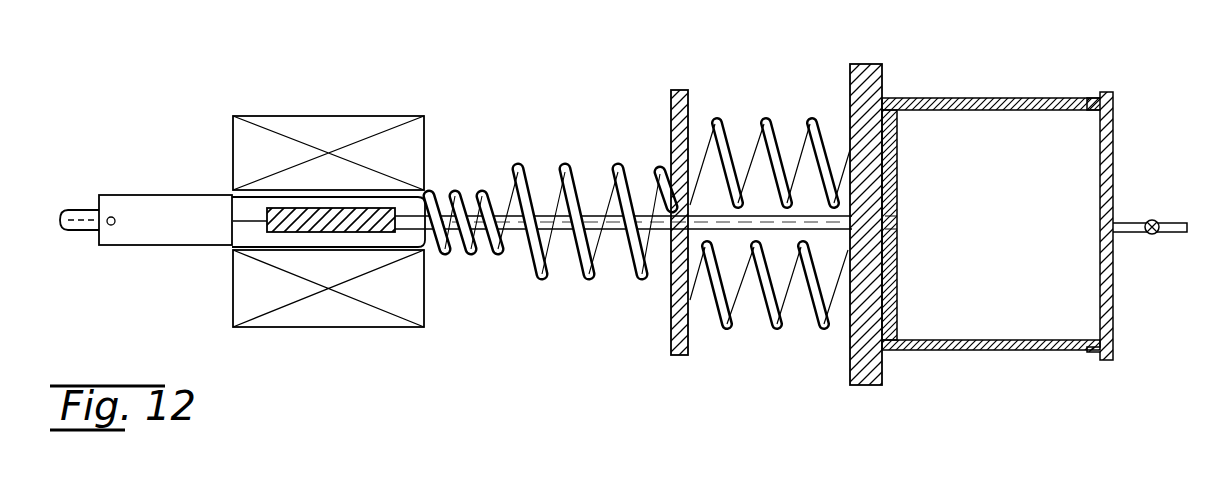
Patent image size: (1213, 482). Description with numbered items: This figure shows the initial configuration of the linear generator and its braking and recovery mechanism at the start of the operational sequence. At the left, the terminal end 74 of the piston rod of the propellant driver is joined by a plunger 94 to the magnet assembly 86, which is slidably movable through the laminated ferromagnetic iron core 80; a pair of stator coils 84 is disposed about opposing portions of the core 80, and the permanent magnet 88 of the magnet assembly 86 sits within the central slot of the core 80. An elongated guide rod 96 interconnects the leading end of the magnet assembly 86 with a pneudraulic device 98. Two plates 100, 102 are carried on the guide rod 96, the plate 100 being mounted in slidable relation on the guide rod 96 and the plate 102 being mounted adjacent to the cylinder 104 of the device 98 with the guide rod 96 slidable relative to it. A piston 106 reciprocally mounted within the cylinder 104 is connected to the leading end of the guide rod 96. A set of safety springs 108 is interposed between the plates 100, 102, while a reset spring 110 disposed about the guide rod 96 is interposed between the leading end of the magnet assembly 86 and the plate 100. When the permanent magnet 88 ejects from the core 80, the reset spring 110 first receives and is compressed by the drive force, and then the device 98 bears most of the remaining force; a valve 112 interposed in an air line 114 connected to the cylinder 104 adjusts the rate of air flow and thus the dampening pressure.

The terminal end 74 is at (88, 233).
The laminated ferromagnetic iron core 80 is at (345, 116).
The stator coils 84 is at (330, 327).
The magnet assembly 86 is at (232, 252).
The permanent magnet 88 is at (348, 208).
The plunger 94 is at (160, 196).
The elongated guide rod 96 is at (668, 268).
The pneudraulic device 98 is at (1000, 99).
The plate 100 is at (673, 356).
The plate 102 is at (870, 386).
The cylinder 104 is at (985, 350).
The piston 106 is at (897, 288).
The safety springs 108 is at (760, 120).
The reset spring 110 is at (535, 258).
The valve 112 is at (1160, 220).
The air line 114 is at (1178, 233).